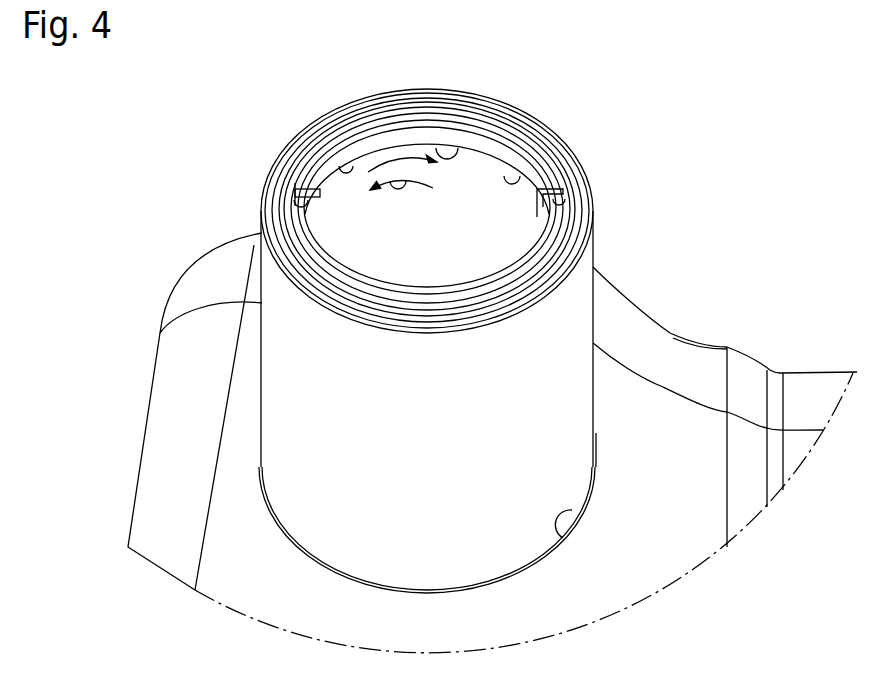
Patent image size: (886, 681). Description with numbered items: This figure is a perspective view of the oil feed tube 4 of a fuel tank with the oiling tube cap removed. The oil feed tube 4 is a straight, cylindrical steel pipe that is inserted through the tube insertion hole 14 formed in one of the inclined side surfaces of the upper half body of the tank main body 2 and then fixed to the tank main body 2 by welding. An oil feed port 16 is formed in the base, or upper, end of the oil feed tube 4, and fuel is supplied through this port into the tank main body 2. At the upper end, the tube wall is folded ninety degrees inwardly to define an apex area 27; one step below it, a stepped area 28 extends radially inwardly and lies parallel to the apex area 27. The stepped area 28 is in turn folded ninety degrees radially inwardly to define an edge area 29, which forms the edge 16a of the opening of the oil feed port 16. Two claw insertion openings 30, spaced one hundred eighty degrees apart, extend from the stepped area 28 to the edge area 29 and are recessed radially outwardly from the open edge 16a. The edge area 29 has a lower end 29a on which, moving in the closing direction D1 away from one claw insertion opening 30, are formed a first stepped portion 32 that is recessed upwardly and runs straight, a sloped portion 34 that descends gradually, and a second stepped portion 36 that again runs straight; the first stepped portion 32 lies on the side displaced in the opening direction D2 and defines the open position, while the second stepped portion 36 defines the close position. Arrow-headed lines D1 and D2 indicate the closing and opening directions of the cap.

The tank main body 2 is at (157, 440).
The oil feed tube 4 is at (290, 393).
The tube insertion hole 14 is at (572, 510).
The oil feed port 16 is at (373, 237).
The edge of the opening 16a is at (357, 283).
The apex area 27 is at (283, 155).
The stepped area 28 is at (300, 133).
The edge area 29 is at (578, 221).
The lower end of the edge area 29a is at (292, 207).
The claw insertion opening 30 is at (292, 188).
The first stepped portion 32 is at (317, 160).
The sloped portion 34 is at (465, 148).
The second stepped portion 36 is at (505, 176).
The closing direction D1 is at (398, 157).
The opening direction D2 is at (404, 178).